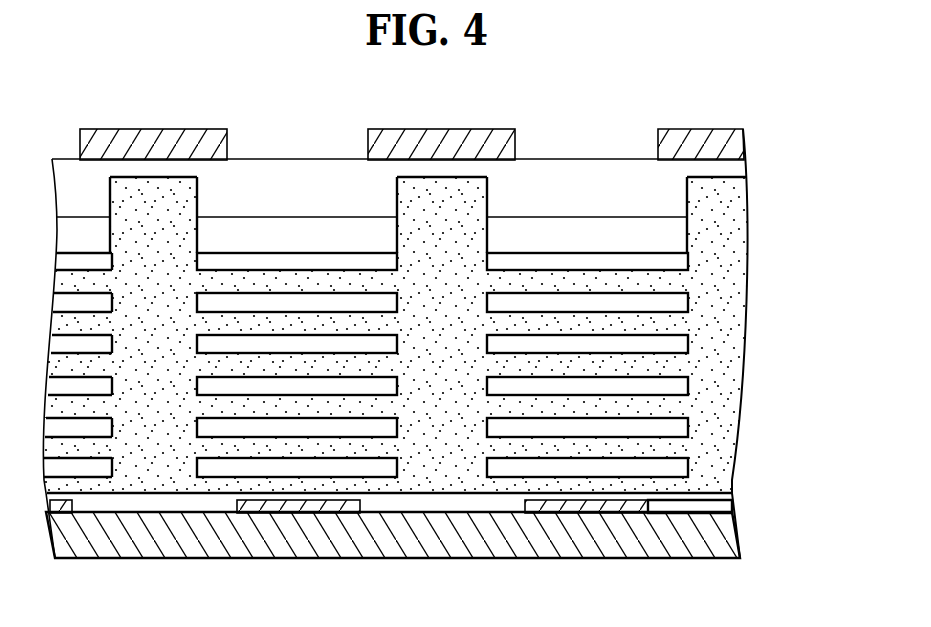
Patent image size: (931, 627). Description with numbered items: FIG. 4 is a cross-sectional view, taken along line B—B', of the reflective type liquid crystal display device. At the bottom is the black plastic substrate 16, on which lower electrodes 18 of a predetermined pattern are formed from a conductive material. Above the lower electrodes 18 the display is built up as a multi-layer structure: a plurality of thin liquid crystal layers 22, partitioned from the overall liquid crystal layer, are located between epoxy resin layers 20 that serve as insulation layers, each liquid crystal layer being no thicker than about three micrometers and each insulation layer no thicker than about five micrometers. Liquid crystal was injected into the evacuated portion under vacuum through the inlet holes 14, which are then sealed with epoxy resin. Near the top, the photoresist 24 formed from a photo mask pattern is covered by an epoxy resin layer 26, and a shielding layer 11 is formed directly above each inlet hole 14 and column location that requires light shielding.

The shielding layer 11 is at (224, 133).
The epoxy resin layer 26 is at (732, 172).
The photoresist 24 is at (675, 239).
The epoxy resin layer 20 is at (675, 263).
The liquid crystal layer 22 is at (670, 408).
The inlet hole 14 is at (155, 452).
The lower electrode 18 is at (278, 513).
The black plastic substrate 16 is at (688, 558).